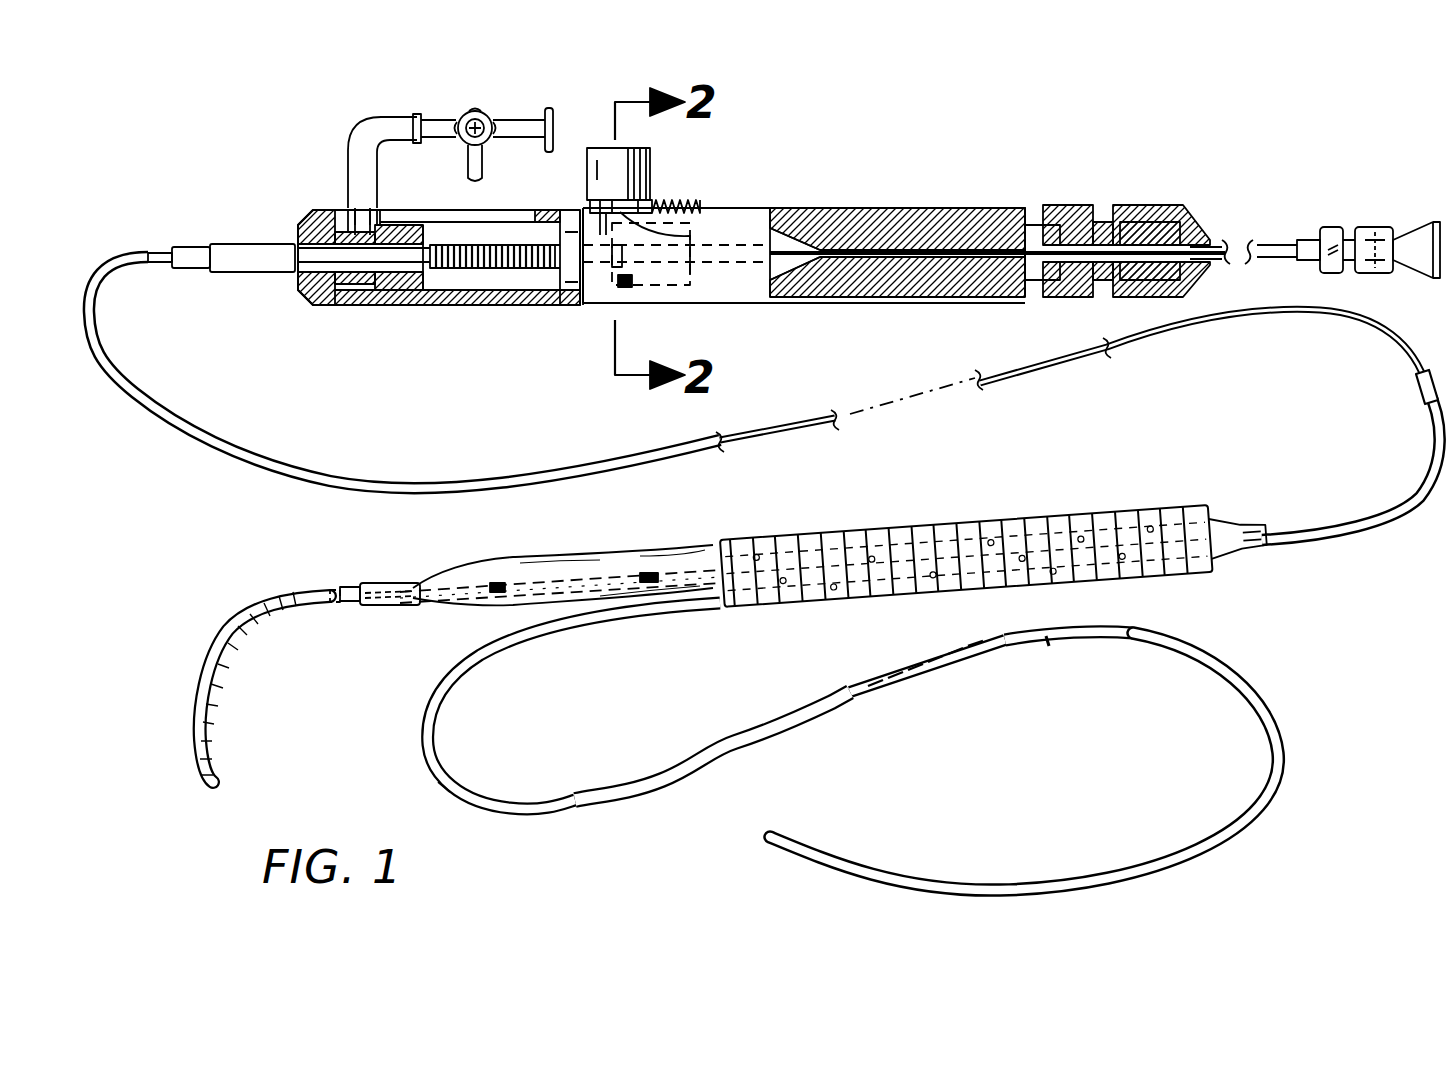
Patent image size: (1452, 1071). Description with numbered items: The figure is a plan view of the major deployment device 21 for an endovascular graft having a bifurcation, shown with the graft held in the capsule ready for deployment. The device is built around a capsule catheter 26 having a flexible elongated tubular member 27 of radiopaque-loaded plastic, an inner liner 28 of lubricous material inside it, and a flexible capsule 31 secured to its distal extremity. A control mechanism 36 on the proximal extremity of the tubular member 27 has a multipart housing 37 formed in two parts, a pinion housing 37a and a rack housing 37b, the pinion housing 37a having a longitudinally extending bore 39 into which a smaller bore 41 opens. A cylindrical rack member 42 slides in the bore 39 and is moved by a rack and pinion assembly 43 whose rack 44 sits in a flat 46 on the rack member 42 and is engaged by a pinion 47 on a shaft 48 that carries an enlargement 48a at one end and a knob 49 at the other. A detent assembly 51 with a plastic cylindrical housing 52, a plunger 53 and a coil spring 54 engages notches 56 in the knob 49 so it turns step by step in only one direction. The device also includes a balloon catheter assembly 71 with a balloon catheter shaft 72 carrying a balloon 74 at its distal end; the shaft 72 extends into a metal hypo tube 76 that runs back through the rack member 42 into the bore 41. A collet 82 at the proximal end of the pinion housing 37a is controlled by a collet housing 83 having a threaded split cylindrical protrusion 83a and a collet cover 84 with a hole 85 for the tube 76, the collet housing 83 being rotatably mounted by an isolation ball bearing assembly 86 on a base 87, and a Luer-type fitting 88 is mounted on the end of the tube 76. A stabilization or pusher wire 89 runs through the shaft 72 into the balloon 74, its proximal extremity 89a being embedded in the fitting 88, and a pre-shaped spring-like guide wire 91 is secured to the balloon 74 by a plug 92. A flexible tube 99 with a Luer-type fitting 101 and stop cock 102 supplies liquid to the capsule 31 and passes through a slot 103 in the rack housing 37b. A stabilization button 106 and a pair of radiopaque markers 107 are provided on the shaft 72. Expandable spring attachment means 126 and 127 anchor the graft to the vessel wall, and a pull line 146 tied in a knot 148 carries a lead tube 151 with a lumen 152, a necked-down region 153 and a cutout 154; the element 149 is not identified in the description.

The major deployment device 21 is at (1032, 470).
The capsule catheter 26 is at (1157, 473).
The flexible elongated tubular member 27 is at (248, 244).
The inner liner 28 is at (190, 247).
The flexible capsule 31 is at (1000, 522).
The control mechanism 36 is at (927, 140).
The multipart housing 37 is at (735, 198).
The pinion housing 37a is at (835, 205).
The rack housing 37b is at (397, 305).
The longitudinally extending bore 39 is at (760, 220).
The smaller bore 41 is at (985, 258).
The rack member 42 is at (363, 305).
The rack and pinion assembly 43 is at (462, 232).
The rack 44 is at (482, 290).
The flat 46 is at (512, 272).
The pinion 47 is at (633, 284).
The shaft 48 is at (688, 268).
The enlargement 48a is at (605, 280).
The knob 49 is at (597, 174).
The detent assembly 51 is at (714, 131).
The plastic cylindrical housing 52 is at (660, 200).
The plunger 53 is at (678, 232).
The coil spring 54 is at (685, 200).
The circumferentially spaced notches 56 is at (590, 205).
The balloon catheter assembly 71 is at (355, 445).
The balloon catheter shaft 72 is at (448, 485).
The balloon 74 is at (580, 560).
The metal hypo tube 76 is at (165, 262).
The collet 82 is at (1146, 300).
The collet housing 83 is at (1080, 212).
The threaded split cylindrical protrusion 83a is at (1140, 205).
The collet cover 84 is at (1172, 207).
The hole 85 is at (1212, 242).
The isolation ball bearing assembly 86 is at (1048, 215).
The base 87 is at (1042, 298).
The Luer-type fitting 88 is at (1380, 228).
The stabilization wire 89 is at (410, 580).
The proximal extremity of pusher wire 89a is at (1332, 228).
The guide wire 91 is at (217, 675).
The plug 92 is at (350, 607).
The flexible tube 99 is at (355, 165).
The Luer-type fitting 101 is at (532, 122).
The stop cock 102 is at (466, 117).
The slot 103 is at (402, 215).
The stabilization button 106 is at (908, 606).
The radiopaque markers 107 is at (497, 583).
The expandable spring attachment means 126 is at (825, 500).
The expandable spring attachment means 127 is at (1070, 530).
The pull line 146 is at (650, 775).
The knot 148 is at (1048, 644).
The guide catheter 149 is at (1024, 761).
The lead tube 151 is at (608, 612).
The lumen 152 is at (455, 788).
The necked-down region 153 is at (1003, 638).
The cutout 154 is at (1120, 632).